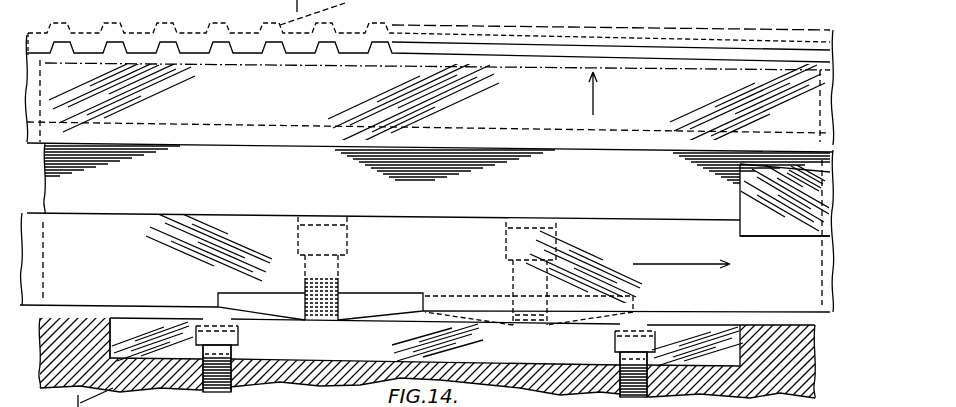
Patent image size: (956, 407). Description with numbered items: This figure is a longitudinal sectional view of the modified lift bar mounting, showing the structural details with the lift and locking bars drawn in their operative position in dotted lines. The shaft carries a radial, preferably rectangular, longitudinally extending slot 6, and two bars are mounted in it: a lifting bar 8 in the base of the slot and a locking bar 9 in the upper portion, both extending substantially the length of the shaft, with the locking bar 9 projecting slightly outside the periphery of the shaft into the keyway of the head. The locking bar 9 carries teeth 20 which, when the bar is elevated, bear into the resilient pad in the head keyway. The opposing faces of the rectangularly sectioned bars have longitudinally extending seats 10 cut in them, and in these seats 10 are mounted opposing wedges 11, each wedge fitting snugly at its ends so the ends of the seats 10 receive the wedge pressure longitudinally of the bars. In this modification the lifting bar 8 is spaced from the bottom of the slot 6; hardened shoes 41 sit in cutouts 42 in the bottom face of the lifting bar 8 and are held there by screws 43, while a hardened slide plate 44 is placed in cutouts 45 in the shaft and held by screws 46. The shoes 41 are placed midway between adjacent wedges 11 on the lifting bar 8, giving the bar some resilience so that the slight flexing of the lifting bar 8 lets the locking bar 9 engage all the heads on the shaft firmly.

The teeth 20 is at (322, 48).
The locking bar 9 is at (429, 92).
The slot 6 is at (430, 181).
The lifting bar 8 is at (425, 258).
The wedges 11 is at (750, 196).
The seats 10 is at (740, 229).
The screws 43 is at (513, 270).
The hardened shoes 41 is at (503, 295).
The cutouts 42 is at (218, 297).
The cutouts 45 is at (113, 343).
The screws 46 is at (240, 338).
The hardened slide plate 44 is at (458, 357).